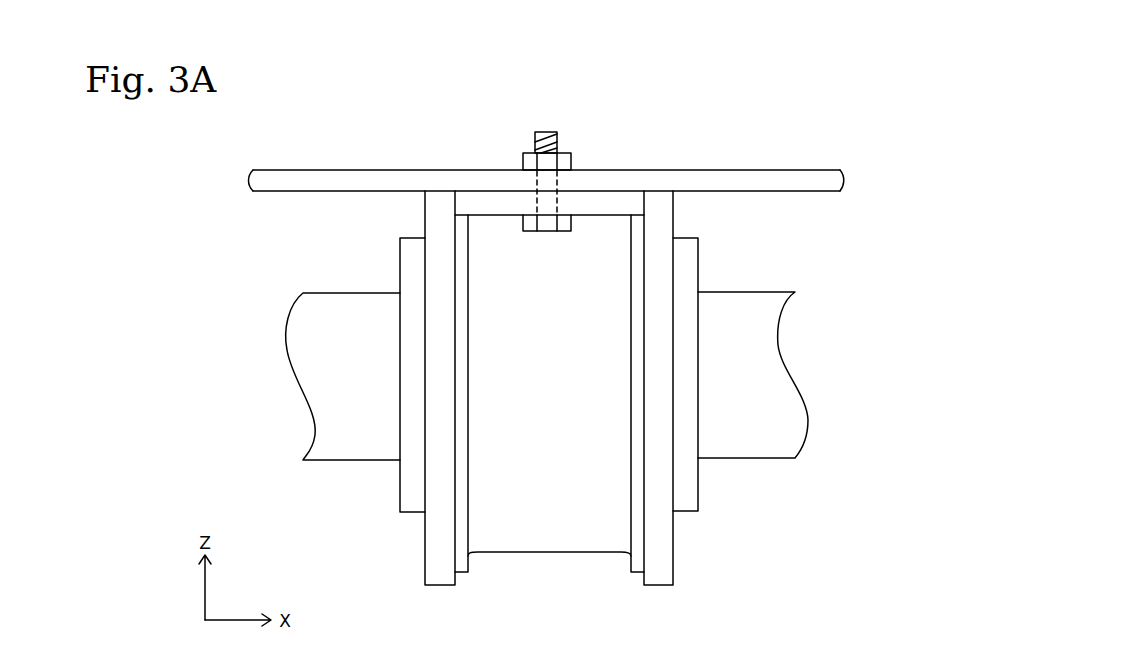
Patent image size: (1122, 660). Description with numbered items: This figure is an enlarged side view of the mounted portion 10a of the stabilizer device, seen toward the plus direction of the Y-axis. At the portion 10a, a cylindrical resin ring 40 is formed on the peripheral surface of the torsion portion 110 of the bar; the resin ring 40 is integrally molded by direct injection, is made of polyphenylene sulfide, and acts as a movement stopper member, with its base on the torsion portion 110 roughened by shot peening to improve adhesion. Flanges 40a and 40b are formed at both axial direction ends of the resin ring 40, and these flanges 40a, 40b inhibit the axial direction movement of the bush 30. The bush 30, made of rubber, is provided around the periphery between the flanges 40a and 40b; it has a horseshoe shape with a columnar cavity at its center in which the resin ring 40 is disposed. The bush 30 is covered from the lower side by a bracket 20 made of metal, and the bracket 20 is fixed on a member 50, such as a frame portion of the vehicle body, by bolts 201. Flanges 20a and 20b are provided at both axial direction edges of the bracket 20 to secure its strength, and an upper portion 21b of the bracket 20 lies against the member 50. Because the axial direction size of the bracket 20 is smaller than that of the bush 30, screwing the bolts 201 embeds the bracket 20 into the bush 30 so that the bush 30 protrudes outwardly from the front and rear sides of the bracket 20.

The member 50 is at (755, 178).
The bolts 201 is at (558, 143).
The top portion of bracket 21b is at (492, 205).
The bracket 20 is at (570, 553).
The flange 20a is at (461, 573).
The flange 20b is at (631, 573).
The portion 10a is at (535, 571).
The resin ring 40 is at (397, 486).
The flange 40a is at (413, 497).
The bush 30 is at (683, 543).
The flange 40b is at (690, 486).
The torsion portion 110 is at (781, 382).